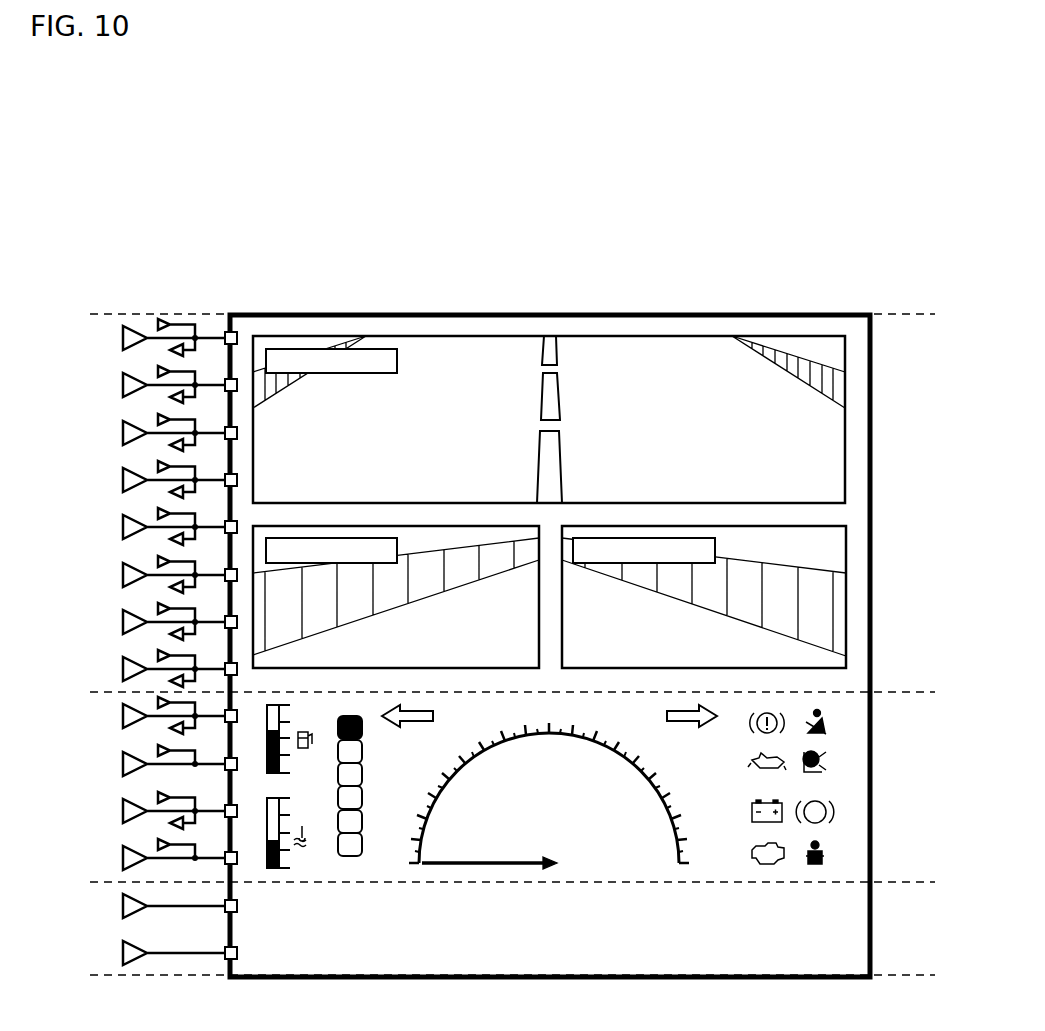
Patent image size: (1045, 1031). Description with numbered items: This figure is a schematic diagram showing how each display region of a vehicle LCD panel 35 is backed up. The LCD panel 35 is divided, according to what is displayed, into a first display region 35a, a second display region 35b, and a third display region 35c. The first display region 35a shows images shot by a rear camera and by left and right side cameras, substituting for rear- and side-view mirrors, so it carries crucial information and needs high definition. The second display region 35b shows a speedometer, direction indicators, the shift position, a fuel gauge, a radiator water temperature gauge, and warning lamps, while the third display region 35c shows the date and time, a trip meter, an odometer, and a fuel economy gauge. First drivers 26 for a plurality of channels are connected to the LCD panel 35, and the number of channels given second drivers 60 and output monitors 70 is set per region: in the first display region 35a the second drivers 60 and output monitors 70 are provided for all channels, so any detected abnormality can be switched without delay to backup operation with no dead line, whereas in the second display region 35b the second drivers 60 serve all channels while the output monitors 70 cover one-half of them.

The first driver 26 is at (136, 322).
The second driver 60 is at (163, 318).
The output monitor 70 is at (180, 343).
The LCD panel 35 is at (556, 314).
The first display region 35a is at (905, 316).
The second display region 35b is at (905, 694).
The third display region 35c is at (905, 885).